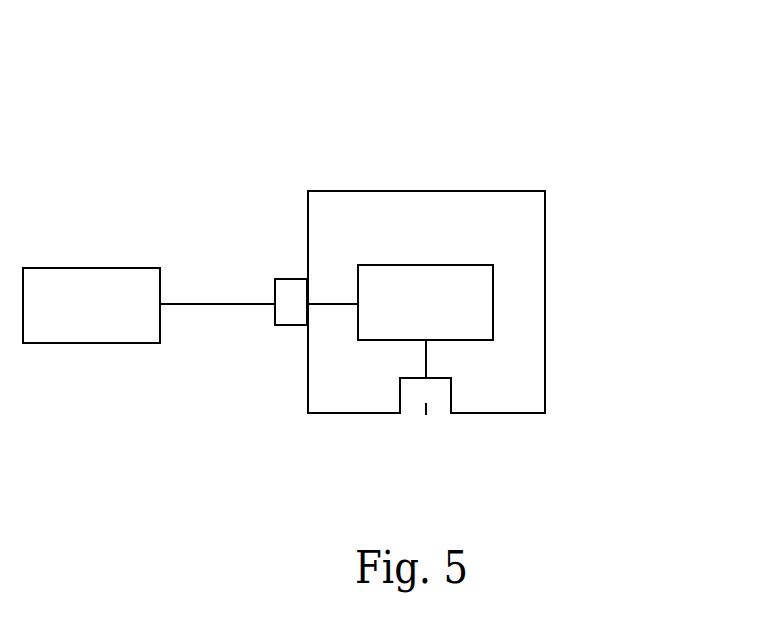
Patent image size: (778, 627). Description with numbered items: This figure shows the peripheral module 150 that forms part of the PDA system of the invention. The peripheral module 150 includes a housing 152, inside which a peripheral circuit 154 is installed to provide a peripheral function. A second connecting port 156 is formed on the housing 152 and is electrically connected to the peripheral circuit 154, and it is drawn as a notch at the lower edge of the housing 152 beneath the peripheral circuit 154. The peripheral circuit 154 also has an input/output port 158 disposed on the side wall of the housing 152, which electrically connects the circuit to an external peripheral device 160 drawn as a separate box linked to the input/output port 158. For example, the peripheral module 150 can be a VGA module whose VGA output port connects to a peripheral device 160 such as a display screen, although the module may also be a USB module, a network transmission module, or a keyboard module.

The peripheral module 150 is at (612, 106).
The housing 152 is at (379, 191).
The peripheral circuit 154 is at (452, 320).
The second connecting port 156 is at (426, 415).
The input/output port 158 is at (295, 295).
The peripheral device 160 is at (122, 320).